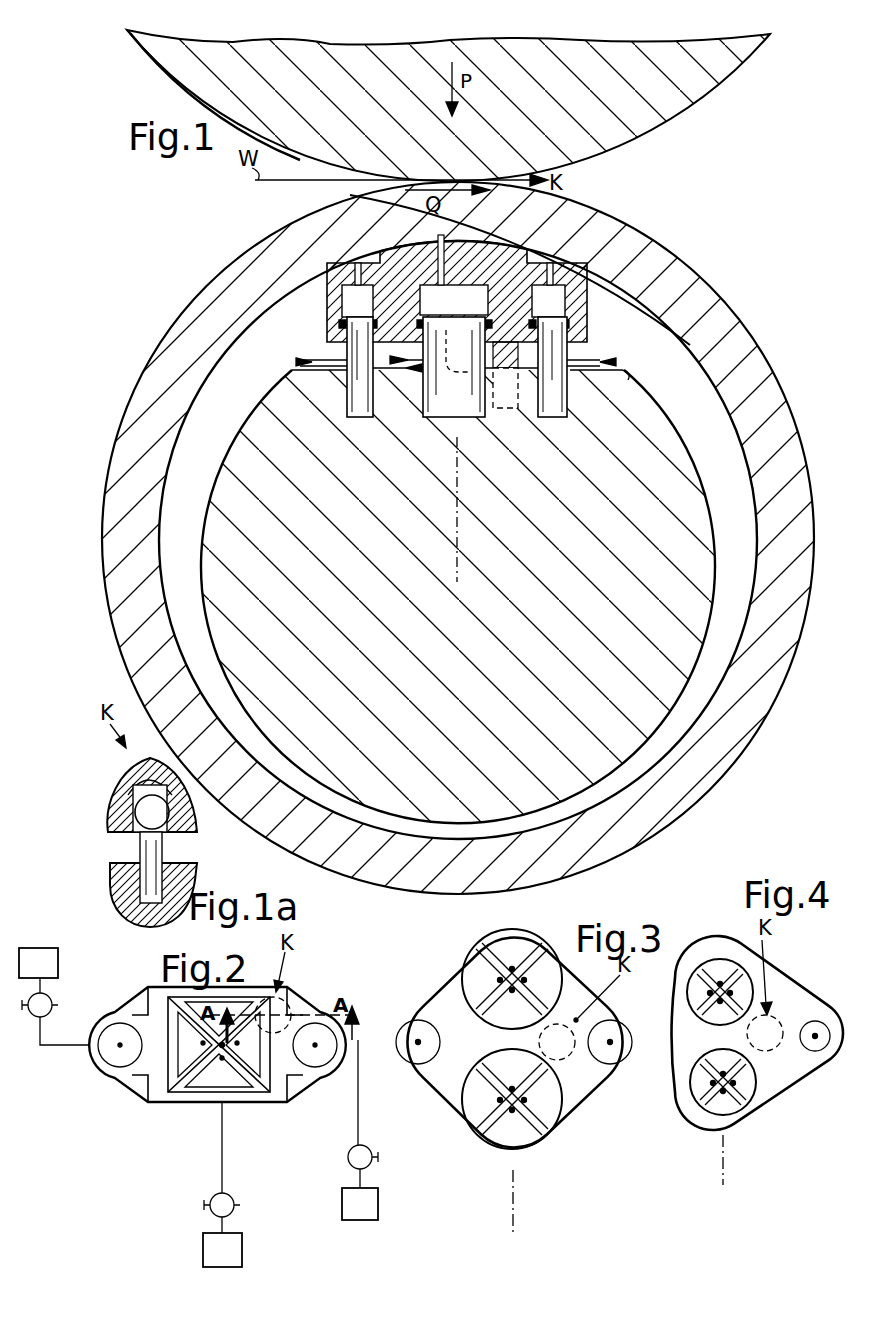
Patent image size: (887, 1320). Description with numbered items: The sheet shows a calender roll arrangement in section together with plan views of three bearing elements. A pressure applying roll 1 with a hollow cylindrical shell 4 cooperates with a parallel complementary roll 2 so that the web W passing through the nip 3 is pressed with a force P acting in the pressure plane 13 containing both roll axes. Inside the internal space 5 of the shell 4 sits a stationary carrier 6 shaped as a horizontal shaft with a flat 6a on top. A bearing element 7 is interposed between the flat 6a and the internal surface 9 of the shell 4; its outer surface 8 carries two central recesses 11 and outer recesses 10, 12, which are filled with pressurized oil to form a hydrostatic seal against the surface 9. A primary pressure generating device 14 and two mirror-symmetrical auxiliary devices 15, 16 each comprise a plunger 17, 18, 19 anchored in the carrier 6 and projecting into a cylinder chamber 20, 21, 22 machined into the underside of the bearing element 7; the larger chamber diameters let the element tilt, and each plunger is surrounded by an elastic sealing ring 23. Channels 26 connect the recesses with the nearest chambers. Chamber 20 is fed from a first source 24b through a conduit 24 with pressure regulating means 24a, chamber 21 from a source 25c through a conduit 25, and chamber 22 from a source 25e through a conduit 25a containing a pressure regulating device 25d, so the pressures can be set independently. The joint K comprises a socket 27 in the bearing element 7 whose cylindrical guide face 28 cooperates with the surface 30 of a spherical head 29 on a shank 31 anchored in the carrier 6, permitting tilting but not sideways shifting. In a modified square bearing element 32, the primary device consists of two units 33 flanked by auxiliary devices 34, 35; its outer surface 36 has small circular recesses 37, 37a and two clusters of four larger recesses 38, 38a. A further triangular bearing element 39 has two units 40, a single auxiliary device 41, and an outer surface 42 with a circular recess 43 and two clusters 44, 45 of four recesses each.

In FIG. 1, the pressure applying roll 1 is at (760, 357).
In FIG. 1, the complementary roll 2 is at (712, 84).
In FIG. 1, the nip 3 is at (388, 176).
In FIG. 1, the hollow cylindrical shell 4 is at (706, 300).
In FIG. 1, the internal space 5 is at (756, 438).
In FIG. 1, the stationary carrier 6 is at (664, 524).
In FIG. 1A, the stationary carrier 6 is at (184, 872).
In FIG. 1, the flat 6a is at (626, 371).
In FIG. 1A, the flat 6a is at (122, 863).
In FIG. 1, the bearing element 7 is at (586, 300).
In FIG. 1A, the bearing element 7 is at (118, 800).
In FIG. 2, the bearing element 7 is at (268, 1102).
In FIG. 1, the outer surface 8 is at (528, 258).
In FIG. 2, the outer surface 8 is at (152, 1020).
In FIG. 1, the internal surface 9 is at (290, 328).
In FIG. 1, the outer recess 10 is at (362, 262).
In FIG. 2, the outer recess 10 is at (118, 1052).
In FIG. 1, the central recesses 11 is at (420, 258).
In FIG. 2, the central recesses 11 is at (216, 1078).
In FIG. 1, the outer recess 12 is at (556, 268).
In FIG. 2, the outer recess 12 is at (316, 1052).
In FIG. 1, the pressure plane 13 is at (456, 503).
In FIG. 3, the pressure plane 13 is at (515, 1217).
In FIG. 4, the pressure plane 13 is at (721, 1178).
In FIG. 1, the primary pressure generating device 14 is at (473, 420).
In FIG. 1, the auxiliary pressure generating device 15 is at (356, 420).
In FIG. 1, the auxiliary pressure generating device 16 is at (554, 420).
In FIG. 1, the plunger 17 is at (454, 418).
In FIG. 1, the plunger 18 is at (350, 396).
In FIG. 1, the plunger 19 is at (555, 402).
In FIG. 1, the cylinder chamber 20 is at (459, 306).
In FIG. 1, the cylinder chamber 21 is at (345, 300).
In FIG. 1, the cylinder chamber 22 is at (587, 282).
In FIG. 1, the elastic sealing ring 23 is at (340, 326).
In FIG. 1, the conduit 24 is at (414, 368).
In FIG. 2, the conduit 24 is at (222, 1163).
In FIG. 2, the pressure regulating means 24a is at (236, 1205).
In FIG. 2, the first source 24b is at (203, 1243).
In FIG. 1, the conduit 25 is at (302, 372).
In FIG. 2, the conduit 25 is at (58, 1050).
In FIG. 1, the conduit 25a is at (600, 374).
In FIG. 2, the conduit 25a is at (52, 1005).
In FIG. 2, the source 25c is at (40, 948).
In FIG. 2, the pressure regulating device 25d is at (348, 1160).
In FIG. 2, the source 25e is at (372, 1202).
In FIG. 1, the channels 26 is at (330, 262).
In FIG. 1A, the socket 27 is at (155, 760).
In FIG. 1A, the cylindrical guide face 28 is at (128, 785).
In FIG. 1A, the spherical head 29 is at (160, 816).
In FIG. 1A, the surface of the sphere 30 is at (133, 812).
In FIG. 1A, the shank 31 is at (146, 880).
In FIG. 3, the bearing element 32 is at (443, 967).
In FIG. 3, the units 33 is at (484, 930).
In FIG. 3, the auxiliary pressure generating device 34 is at (418, 1090).
In FIG. 3, the auxiliary pressure generating device 35 is at (621, 1078).
In FIG. 3, the outer surface 36 is at (428, 1002).
In FIG. 3, the recess 37 is at (408, 1050).
In FIG. 3, the recess 37a is at (603, 1055).
In FIG. 3, the recesses 38 is at (523, 936).
In FIG. 3, the recesses 38a is at (520, 1132).
In FIG. 4, the bearing element 39 is at (796, 984).
In FIG. 4, the units 40 is at (693, 953).
In FIG. 4, the auxiliary pressure generating device 41 is at (833, 1062).
In FIG. 4, the outer surface 42 is at (808, 1005).
In FIG. 4, the recess 43 is at (814, 1050).
In FIG. 4, the cluster of recesses 44 is at (716, 965).
In FIG. 4, the cluster of recesses 45 is at (700, 1085).